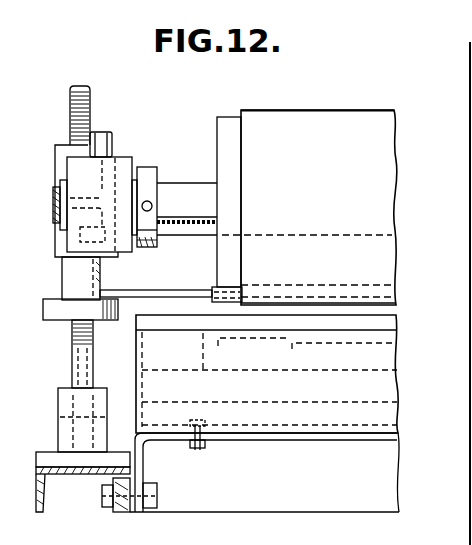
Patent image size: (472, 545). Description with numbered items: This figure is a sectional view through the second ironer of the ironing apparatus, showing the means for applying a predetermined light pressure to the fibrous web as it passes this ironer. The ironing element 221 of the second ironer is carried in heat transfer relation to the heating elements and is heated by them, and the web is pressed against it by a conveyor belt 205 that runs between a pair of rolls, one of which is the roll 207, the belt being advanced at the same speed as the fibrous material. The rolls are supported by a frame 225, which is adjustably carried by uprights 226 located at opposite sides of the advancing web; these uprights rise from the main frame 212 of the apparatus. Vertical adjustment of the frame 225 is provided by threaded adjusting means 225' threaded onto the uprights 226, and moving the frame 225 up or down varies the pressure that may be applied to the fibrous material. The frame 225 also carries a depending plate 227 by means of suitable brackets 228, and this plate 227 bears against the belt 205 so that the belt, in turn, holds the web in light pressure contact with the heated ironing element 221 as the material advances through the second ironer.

The conveyor belt 205 is at (333, 110).
The roll 207 is at (230, 120).
The frame 212 is at (69, 475).
The ironing element 221 is at (255, 322).
The frame 225 is at (135, 191).
The threaded adjusting means 225' is at (68, 343).
The upright 226 is at (89, 113).
The depending plate 227 is at (181, 293).
The bracket 228 is at (100, 287).